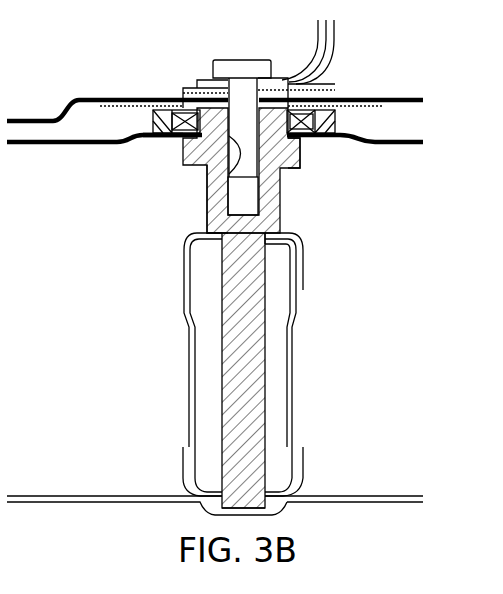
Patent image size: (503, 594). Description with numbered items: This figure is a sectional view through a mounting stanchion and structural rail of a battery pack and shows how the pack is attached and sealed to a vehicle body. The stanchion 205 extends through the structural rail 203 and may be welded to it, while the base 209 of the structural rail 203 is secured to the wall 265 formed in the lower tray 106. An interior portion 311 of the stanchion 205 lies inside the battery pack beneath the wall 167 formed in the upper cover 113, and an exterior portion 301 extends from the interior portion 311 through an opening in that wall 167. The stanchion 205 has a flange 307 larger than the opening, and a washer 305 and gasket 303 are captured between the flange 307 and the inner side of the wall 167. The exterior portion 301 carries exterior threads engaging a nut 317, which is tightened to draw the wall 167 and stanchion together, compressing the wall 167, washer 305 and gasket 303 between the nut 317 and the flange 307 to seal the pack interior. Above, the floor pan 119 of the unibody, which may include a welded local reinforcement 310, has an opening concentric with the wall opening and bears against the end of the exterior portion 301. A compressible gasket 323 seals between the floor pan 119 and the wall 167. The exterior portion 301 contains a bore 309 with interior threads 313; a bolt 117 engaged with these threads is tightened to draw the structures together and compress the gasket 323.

The bolt 117 is at (210, 50).
The floor pan 119 is at (147, 97).
The exterior portion 301 is at (212, 116).
The local reinforcement 310 is at (130, 109).
The wall 167 is at (97, 147).
The gasket 303 is at (160, 141).
The upper cover 113 is at (100, 178).
The interior threads 313 is at (207, 186).
The stanchion 205 is at (220, 272).
The structural rail 203 is at (187, 318).
The lower tray 106 is at (141, 452).
The wall 265 is at (107, 495).
The base 209 is at (305, 496).
The nut 317 is at (296, 117).
The gasket 323 is at (335, 115).
The washer 305 is at (305, 140).
The flange 307 is at (297, 153).
The bore 309 is at (245, 192).
The interior portion 311 is at (295, 216).